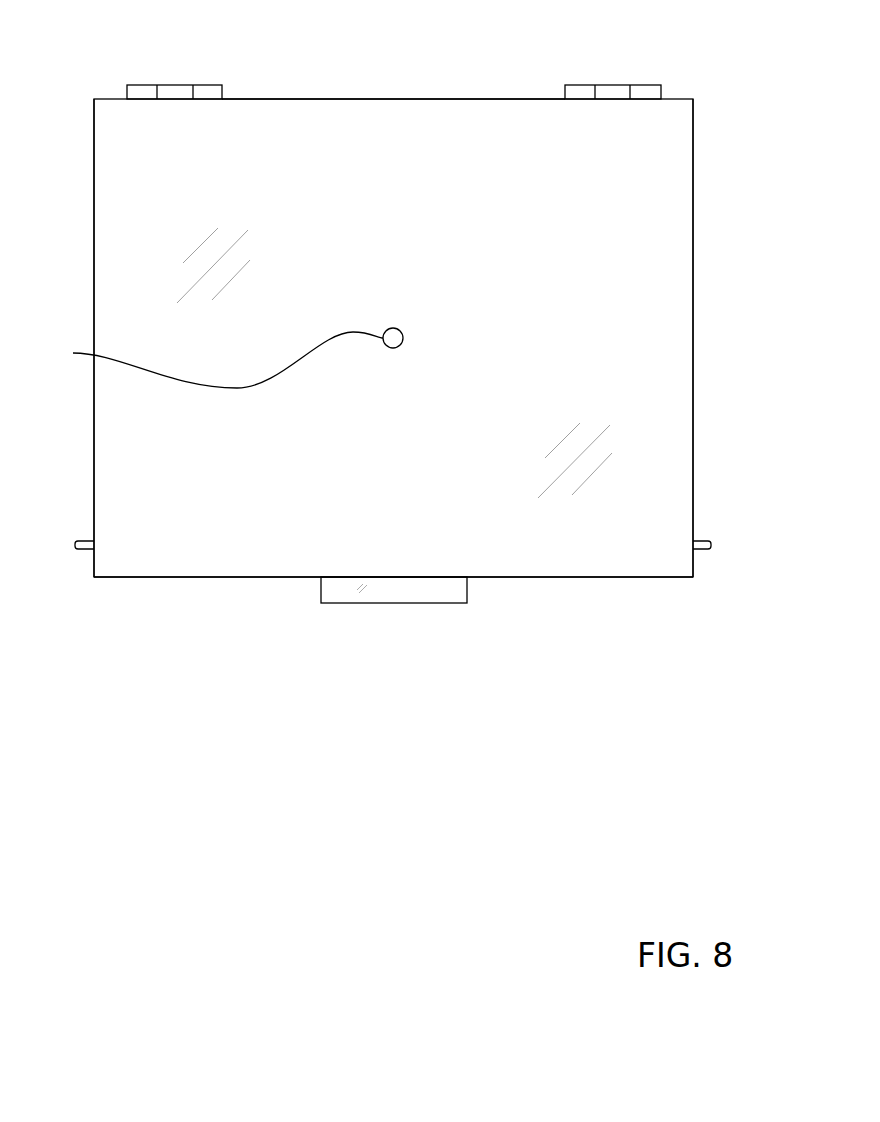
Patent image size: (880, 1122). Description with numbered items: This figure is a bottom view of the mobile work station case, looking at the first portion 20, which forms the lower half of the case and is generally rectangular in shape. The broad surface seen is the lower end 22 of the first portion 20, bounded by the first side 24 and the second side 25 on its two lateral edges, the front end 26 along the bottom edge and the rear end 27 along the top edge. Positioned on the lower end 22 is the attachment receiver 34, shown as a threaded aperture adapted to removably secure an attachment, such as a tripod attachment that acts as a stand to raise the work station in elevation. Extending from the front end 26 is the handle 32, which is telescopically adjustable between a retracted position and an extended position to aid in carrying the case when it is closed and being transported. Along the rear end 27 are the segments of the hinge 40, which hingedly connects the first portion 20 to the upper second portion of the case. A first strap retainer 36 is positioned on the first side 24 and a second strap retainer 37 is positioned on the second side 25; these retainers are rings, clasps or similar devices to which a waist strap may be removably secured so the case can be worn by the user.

The first portion 20 is at (553, 577).
The lower end 22 is at (278, 537).
The first side 24 is at (694, 397).
The second side 25 is at (93, 440).
The front end 26 is at (502, 577).
The rear end 27 is at (378, 99).
The handle 32 is at (387, 603).
The attachment receiver 34 is at (216, 358).
The first strap retainer 36 is at (711, 549).
The second strap retainer 37 is at (78, 549).
The hinge 40 is at (185, 85).